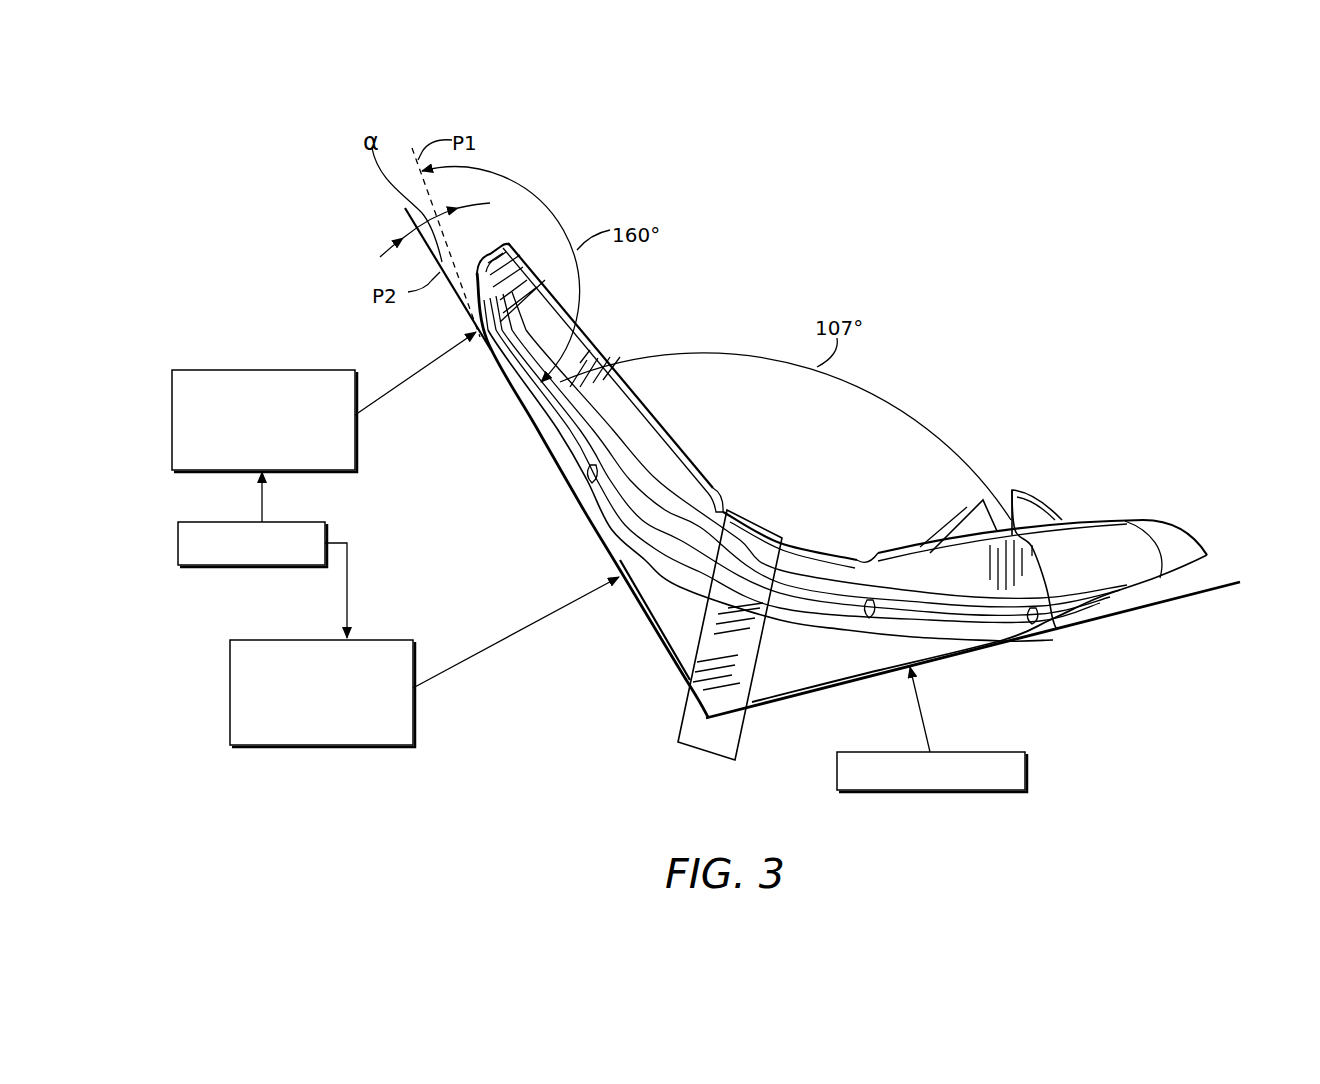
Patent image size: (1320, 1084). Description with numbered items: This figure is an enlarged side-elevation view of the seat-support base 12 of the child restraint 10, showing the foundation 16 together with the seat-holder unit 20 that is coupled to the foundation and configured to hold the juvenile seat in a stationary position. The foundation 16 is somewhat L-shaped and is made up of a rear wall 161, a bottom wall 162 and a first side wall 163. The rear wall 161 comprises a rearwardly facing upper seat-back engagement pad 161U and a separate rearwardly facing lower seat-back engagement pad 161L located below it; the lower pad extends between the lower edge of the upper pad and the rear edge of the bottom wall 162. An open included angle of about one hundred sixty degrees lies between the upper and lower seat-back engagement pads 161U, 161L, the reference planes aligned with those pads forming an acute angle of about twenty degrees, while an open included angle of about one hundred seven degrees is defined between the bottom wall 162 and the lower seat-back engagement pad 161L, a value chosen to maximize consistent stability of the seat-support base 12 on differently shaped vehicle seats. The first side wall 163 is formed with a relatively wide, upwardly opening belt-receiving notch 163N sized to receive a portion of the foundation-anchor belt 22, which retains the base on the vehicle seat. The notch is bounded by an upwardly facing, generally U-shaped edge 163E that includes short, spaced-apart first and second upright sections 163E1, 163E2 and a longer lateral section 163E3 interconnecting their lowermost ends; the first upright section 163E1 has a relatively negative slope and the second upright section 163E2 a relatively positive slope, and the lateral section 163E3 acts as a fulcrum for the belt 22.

The child restraint 10 is at (952, 222).
The seat-support base 12 is at (1213, 423).
The foundation 16 is at (1177, 522).
The seat-holder unit 20 is at (1053, 513).
The foundation-anchor belt 22 is at (678, 727).
The rear wall 161 is at (250, 566).
The upper seat-back engagement pad 161U is at (256, 370).
The lower seat-back engagement pad 161L is at (325, 746).
The bottom wall 162 is at (1025, 770).
The first side wall 163 is at (953, 573).
The upwardly facing edge 163E is at (806, 543).
The first upright section 163E1 is at (703, 490).
The second upright section 163E2 is at (875, 550).
The lateral section 163E3 is at (830, 550).
The belt-receiving notch 163N is at (728, 503).